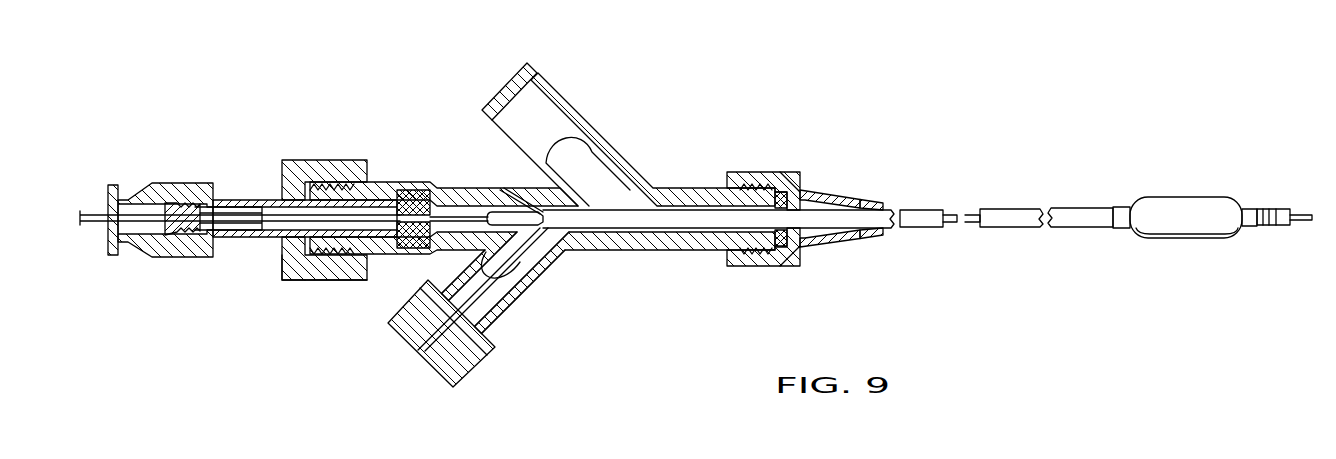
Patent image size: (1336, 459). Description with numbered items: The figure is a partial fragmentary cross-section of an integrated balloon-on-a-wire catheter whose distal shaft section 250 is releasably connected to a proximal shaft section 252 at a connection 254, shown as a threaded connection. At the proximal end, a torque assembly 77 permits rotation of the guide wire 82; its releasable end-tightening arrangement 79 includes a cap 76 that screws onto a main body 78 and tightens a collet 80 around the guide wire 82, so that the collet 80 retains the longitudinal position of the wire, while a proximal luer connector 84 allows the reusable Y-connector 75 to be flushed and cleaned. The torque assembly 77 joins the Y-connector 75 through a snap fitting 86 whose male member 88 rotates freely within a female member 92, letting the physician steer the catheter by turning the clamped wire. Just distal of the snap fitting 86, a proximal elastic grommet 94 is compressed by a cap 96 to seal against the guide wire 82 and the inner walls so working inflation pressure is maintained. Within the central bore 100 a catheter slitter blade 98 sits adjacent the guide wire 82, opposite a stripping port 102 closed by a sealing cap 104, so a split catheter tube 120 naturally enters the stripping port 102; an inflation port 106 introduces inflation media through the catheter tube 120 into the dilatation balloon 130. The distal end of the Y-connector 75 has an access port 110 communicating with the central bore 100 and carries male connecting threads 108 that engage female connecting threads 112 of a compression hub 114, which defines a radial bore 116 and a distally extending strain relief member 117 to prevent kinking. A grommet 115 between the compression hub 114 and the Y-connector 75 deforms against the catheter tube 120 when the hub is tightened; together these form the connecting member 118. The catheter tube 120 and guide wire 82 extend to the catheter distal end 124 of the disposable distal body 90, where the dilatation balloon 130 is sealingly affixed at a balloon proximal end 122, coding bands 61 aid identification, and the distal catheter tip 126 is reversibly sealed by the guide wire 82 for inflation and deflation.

The coding bands 61 is at (1276, 227).
The Y-connector 75 is at (619, 92).
The cap 76 is at (172, 183).
The torque assembly 77 is at (223, 118).
The main body 78 is at (250, 233).
The releasable end-tightening arrangement 79 is at (143, 271).
The collet 80 is at (195, 235).
The guide wire 82 is at (95, 210).
The proximal luer connector 84 is at (110, 185).
The snap fitting 86 is at (264, 191).
The male member 88 is at (290, 280).
The disposable distal body 90 is at (1051, 266).
The female member 92 is at (300, 165).
The proximal elastic grommet 94 is at (397, 195).
The cap 96 is at (332, 280).
The catheter slitter blade 98 is at (533, 190).
The central bore 100 is at (447, 207).
The stripping port 102 is at (493, 313).
The sealing cap 104 is at (392, 335).
The inflation port 106 is at (616, 160).
The male connecting threads 108 is at (765, 185).
The access port 110 is at (760, 247).
The female connecting threads 112 is at (742, 187).
The compression hub 114 is at (803, 178).
The grommet 115 is at (788, 243).
The radial bore 116 is at (837, 200).
The strain relief member 117 is at (860, 240).
The connecting member 118 is at (822, 131).
The catheter tube 120 is at (710, 222).
The balloon proximal end 122 is at (1122, 228).
The catheter distal end 124 is at (1243, 174).
The distal catheter tip 126 is at (1278, 212).
The dilatation balloon 130 is at (1173, 238).
The distal shaft section 250 is at (1020, 208).
The proximal shaft section 252 is at (905, 210).
The connection 254 is at (1007, 237).